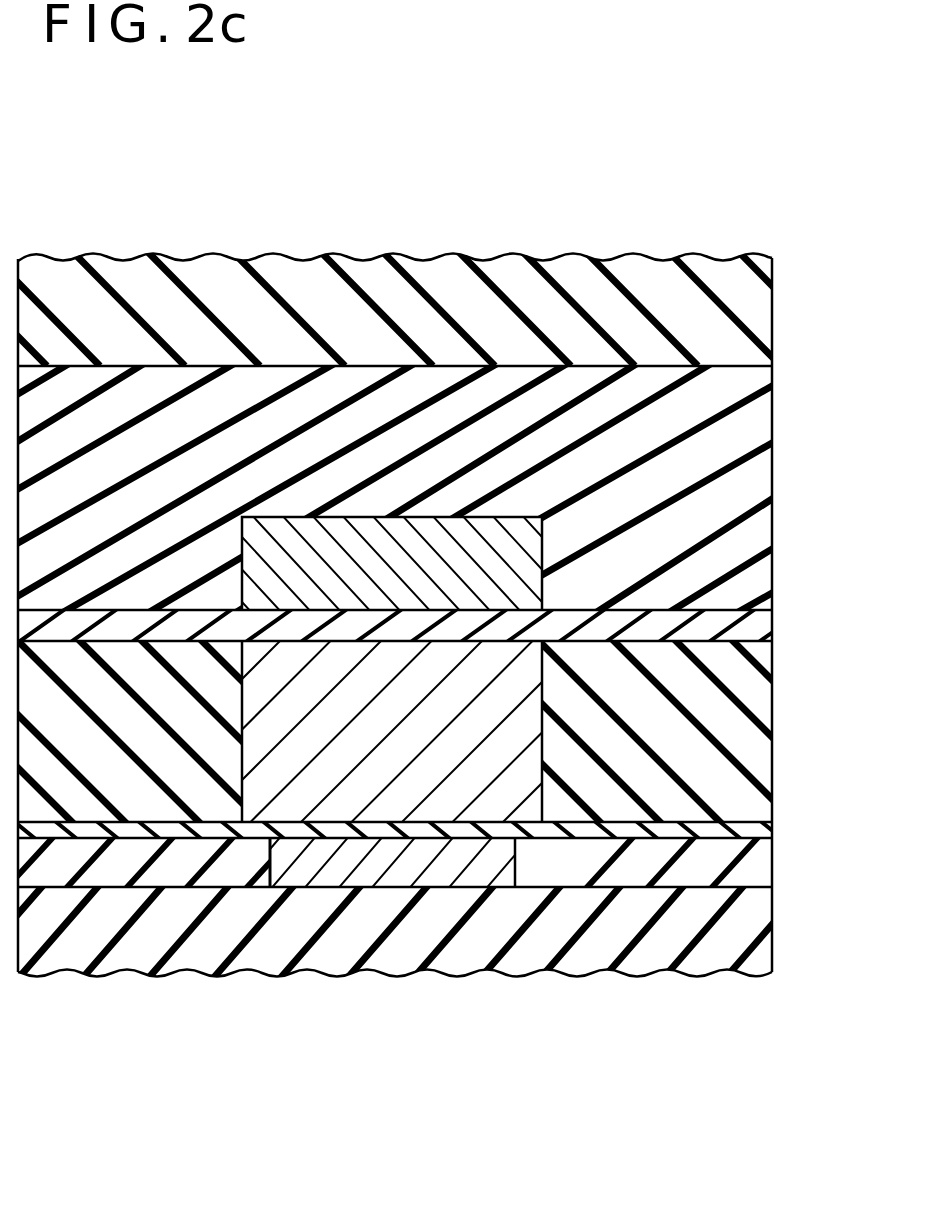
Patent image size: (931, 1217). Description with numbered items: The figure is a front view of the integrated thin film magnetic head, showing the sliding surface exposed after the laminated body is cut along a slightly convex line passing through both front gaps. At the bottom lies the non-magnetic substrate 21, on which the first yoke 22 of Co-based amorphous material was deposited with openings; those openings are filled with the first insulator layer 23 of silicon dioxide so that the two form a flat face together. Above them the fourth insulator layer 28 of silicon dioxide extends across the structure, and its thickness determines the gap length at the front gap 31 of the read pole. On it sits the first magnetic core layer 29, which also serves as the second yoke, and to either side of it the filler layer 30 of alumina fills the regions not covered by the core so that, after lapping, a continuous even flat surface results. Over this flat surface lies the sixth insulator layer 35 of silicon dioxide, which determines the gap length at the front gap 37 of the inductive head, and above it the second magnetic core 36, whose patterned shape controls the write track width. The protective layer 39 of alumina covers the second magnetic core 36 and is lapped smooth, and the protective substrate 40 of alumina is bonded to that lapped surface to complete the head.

The non-magnetic substrate 21 is at (760, 917).
The first yoke 22 is at (383, 880).
The first insulator layer 23 is at (760, 862).
The fourth insulator layer 28 is at (767, 830).
The first magnetic core layer 29 is at (260, 790).
The filler layer 30 is at (760, 703).
The front gap 31 is at (428, 828).
The sixth insulator layer 35 is at (760, 615).
The second magnetic core 36 is at (533, 550).
The front gap 37 is at (199, 633).
The protective layer 39 is at (431, 488).
The protective substrate 40 is at (758, 307).